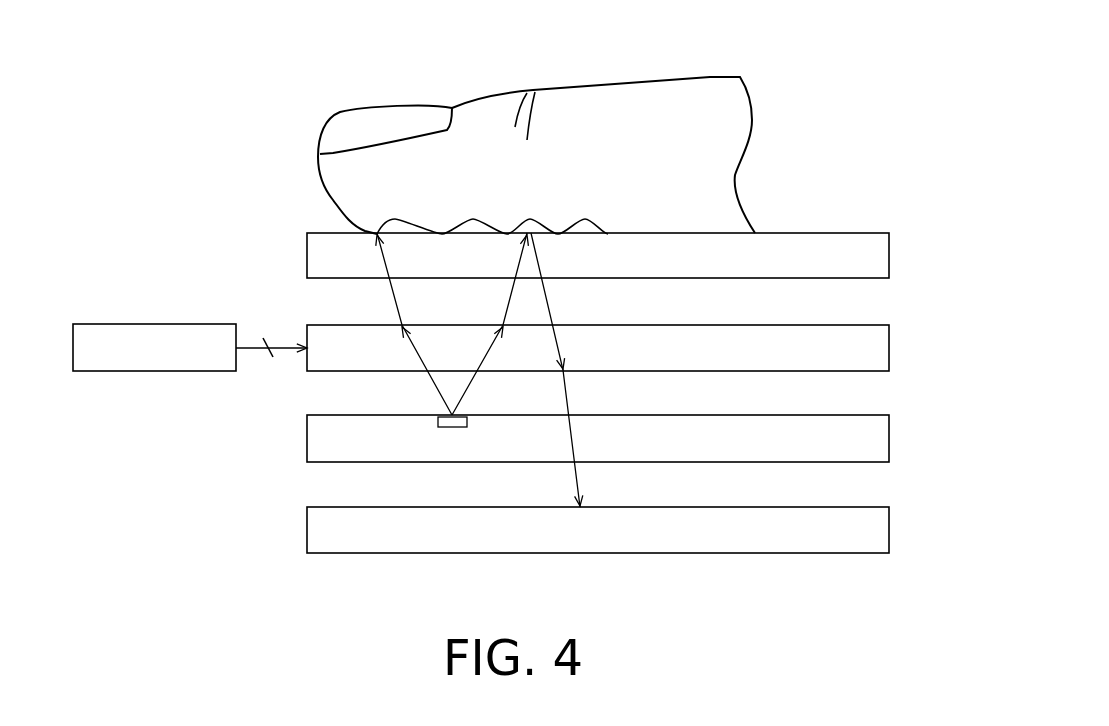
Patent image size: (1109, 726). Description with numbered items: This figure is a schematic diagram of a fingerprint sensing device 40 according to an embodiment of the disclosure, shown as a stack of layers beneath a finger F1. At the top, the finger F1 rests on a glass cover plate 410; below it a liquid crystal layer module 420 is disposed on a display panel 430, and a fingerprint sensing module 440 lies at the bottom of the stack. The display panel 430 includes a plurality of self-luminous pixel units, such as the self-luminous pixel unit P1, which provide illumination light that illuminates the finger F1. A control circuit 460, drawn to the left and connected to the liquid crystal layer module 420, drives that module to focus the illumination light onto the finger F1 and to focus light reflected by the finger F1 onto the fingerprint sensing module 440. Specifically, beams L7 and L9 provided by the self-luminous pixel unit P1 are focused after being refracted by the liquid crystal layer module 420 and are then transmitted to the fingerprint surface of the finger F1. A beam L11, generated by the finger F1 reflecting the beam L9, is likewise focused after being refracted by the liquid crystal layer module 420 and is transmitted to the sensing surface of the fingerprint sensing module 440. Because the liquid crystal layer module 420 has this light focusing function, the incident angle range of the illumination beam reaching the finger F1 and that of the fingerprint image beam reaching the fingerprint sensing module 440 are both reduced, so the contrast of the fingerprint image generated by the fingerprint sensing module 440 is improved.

The fingerprint sensing device 40 is at (904, 650).
The glass cover plate 410 is at (891, 257).
The liquid crystal layer module 420 is at (891, 347).
The display panel 430 is at (891, 440).
The fingerprint sensing module 440 is at (891, 530).
The control circuit 460 is at (167, 324).
The finger F1 is at (712, 77).
The self-luminous pixel unit P1 is at (453, 427).
The beam L7 is at (433, 387).
The beam L9 is at (473, 380).
The beam L11 is at (550, 301).